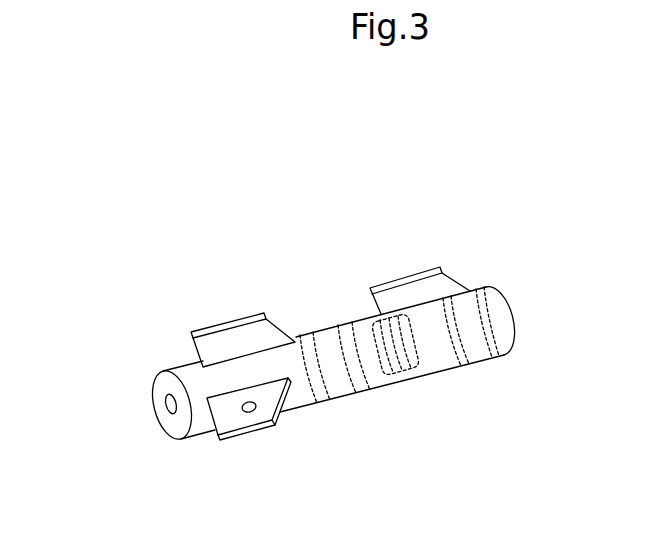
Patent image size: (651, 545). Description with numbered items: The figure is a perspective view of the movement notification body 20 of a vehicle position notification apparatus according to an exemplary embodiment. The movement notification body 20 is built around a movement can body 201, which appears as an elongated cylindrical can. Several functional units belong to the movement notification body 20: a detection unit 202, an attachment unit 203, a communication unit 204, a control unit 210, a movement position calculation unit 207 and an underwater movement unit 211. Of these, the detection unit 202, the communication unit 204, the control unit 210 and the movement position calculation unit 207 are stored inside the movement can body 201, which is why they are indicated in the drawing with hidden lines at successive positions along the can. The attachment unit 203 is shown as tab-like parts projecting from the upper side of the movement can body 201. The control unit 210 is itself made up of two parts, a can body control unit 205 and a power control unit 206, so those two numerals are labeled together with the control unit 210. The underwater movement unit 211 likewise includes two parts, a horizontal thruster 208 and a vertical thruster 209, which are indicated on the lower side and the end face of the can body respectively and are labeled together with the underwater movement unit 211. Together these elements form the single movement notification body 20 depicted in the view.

The movement notification body 20 is at (506, 186).
The movement can body 201 is at (185, 362).
The detection unit 202 is at (505, 357).
The attachment unit 203 is at (374, 298).
The communication unit 204 is at (364, 392).
The can body control unit 205 is at (329, 401).
The power control unit 206 is at (407, 379).
The movement position calculation unit 207 is at (452, 367).
The horizontal thruster 208 is at (247, 413).
The vertical thruster 209 is at (165, 401).
The control unit 210 is at (404, 398).
The underwater movement unit 211 is at (168, 428).